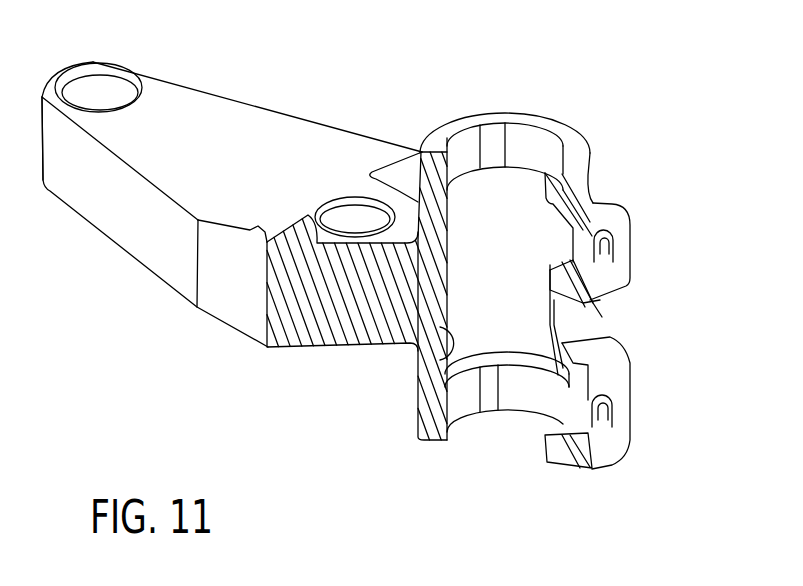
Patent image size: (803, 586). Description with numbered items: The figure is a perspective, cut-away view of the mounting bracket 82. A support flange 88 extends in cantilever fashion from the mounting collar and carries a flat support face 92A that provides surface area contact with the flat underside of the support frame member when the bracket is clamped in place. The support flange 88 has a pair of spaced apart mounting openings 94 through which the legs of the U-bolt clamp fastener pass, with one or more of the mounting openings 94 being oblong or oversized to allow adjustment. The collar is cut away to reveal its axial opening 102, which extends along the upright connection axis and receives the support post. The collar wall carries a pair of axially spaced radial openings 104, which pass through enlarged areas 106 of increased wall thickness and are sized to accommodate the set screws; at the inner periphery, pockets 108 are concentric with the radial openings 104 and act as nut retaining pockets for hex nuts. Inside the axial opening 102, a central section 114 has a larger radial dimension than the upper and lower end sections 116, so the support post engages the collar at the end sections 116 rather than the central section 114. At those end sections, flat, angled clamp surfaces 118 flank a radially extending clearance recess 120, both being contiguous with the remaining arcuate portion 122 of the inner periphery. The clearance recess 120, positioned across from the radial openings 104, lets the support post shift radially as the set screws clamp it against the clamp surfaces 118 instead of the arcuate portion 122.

The mounting bracket 82 is at (366, 274).
The support flange 88 is at (232, 204).
The flat support face 92A is at (190, 143).
The mounting openings 94 is at (112, 77).
The axial opening 102 is at (522, 274).
The radial openings 104 is at (599, 256).
The enlarged areas 106 is at (611, 220).
The pockets 108 is at (583, 232).
The central section 114 is at (440, 358).
The upper and lower end sections 116 is at (502, 172).
The clamp surfaces 118 is at (492, 135).
The clearance recess 120 is at (462, 143).
The arcuate portion 122 is at (540, 118).